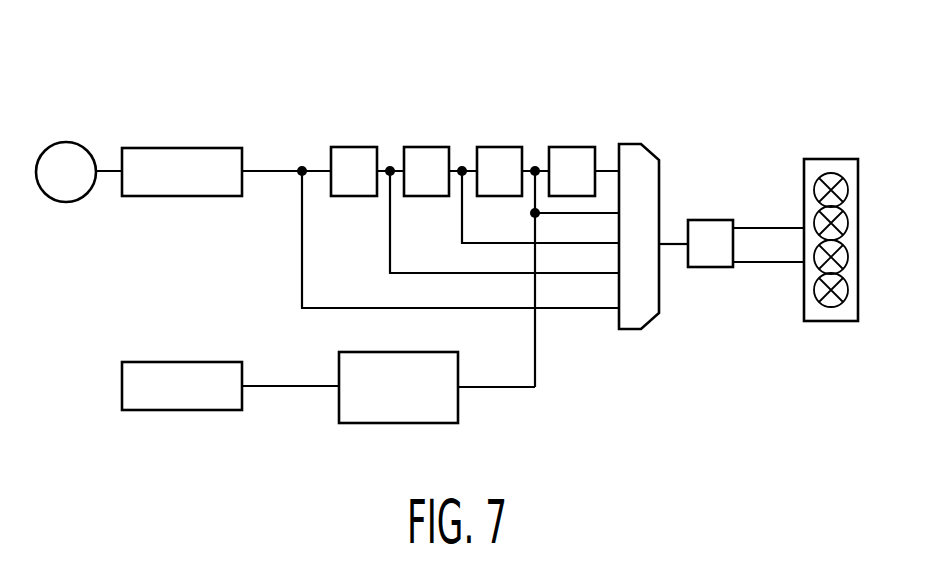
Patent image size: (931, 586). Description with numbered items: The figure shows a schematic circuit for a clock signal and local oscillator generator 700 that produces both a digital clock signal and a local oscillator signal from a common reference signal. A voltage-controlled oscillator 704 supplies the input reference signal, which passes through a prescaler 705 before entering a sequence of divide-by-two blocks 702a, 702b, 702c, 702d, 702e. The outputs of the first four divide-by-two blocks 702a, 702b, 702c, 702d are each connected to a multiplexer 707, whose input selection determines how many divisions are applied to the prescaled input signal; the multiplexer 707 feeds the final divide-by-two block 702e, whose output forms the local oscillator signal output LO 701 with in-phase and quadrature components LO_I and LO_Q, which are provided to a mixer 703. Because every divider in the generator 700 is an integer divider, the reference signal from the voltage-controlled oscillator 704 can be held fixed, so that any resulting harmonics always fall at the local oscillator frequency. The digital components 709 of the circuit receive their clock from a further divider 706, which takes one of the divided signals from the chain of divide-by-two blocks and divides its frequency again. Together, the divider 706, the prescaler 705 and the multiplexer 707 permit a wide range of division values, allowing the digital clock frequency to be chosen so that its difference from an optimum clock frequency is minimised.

The clock signal and local oscillator generator 700 is at (120, 66).
The local oscillator signal output LO 701 is at (740, 228).
The divide-by-two block 702a is at (350, 147).
The divide-by-two block 702b is at (425, 147).
The divide-by-two block 702c is at (497, 147).
The divide-by-two block 702d is at (572, 147).
The divide-by-two block 702e is at (707, 220).
The mixer 703 is at (823, 159).
The voltage-controlled oscillator 704 is at (62, 142).
The prescaler 705 is at (173, 148).
The divider 706 is at (458, 408).
The multiplexer 707 is at (632, 330).
The digital components 709 is at (122, 375).